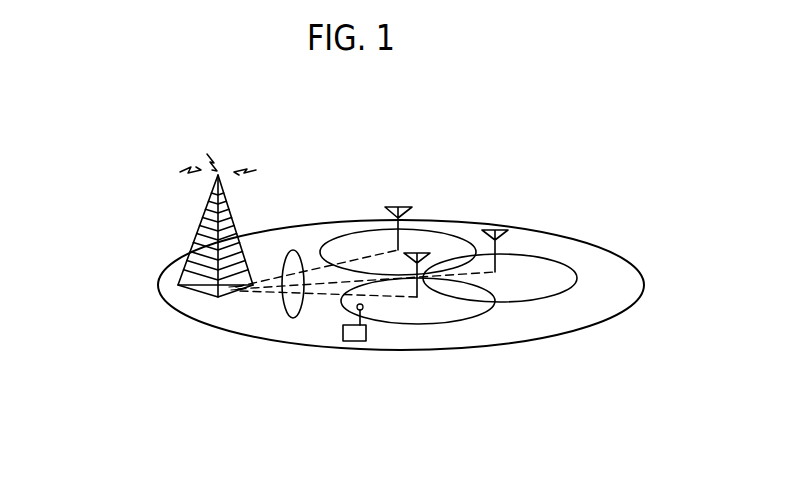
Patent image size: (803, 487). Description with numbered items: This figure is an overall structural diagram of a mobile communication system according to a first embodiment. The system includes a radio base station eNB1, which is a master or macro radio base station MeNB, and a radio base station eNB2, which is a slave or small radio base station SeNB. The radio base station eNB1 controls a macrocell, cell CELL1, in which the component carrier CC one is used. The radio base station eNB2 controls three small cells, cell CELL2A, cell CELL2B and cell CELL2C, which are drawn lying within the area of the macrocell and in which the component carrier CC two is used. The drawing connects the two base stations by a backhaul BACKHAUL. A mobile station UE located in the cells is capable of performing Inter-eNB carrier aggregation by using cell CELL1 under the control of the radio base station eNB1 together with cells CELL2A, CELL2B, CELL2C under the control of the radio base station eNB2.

The cell #1 CELL1 is at (557, 338).
The cell #2A CELL2A is at (345, 236).
The cell #2B CELL2B is at (565, 262).
The cell #2C CELL2C is at (445, 324).
The radio base station eNB #1 eNB1 is at (200, 297).
The radio base station eNB #2 eNB2 is at (571, 224).
The backhaul BACKHAUL is at (297, 318).
The mobile station UE is at (337, 323).